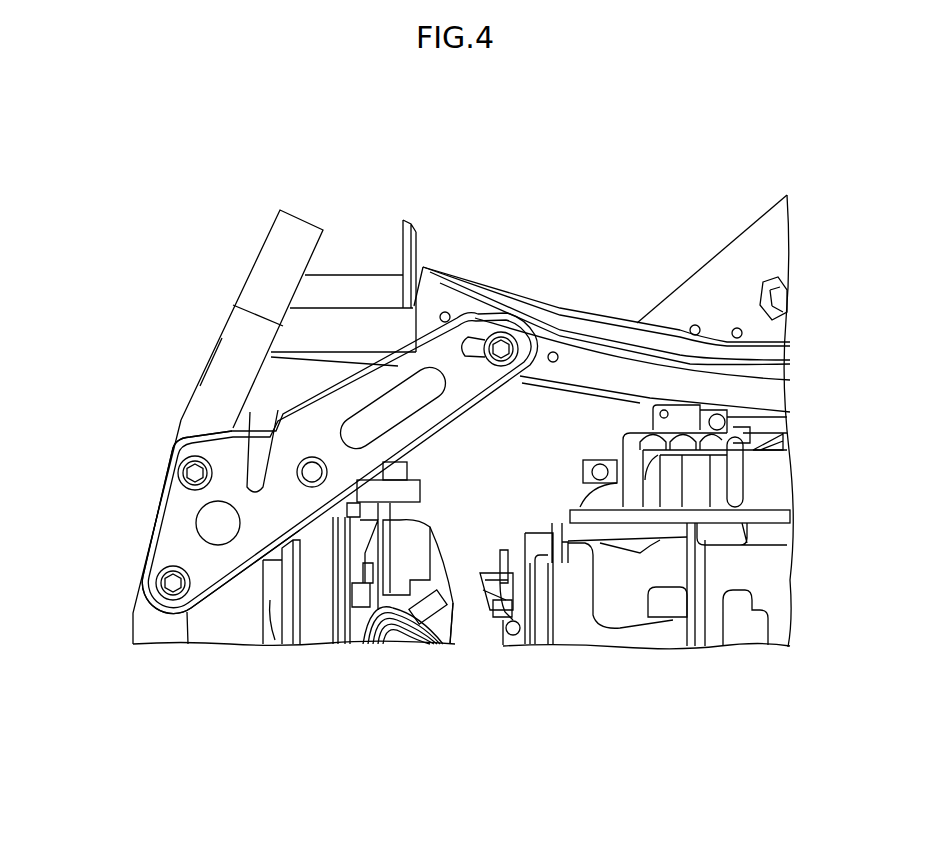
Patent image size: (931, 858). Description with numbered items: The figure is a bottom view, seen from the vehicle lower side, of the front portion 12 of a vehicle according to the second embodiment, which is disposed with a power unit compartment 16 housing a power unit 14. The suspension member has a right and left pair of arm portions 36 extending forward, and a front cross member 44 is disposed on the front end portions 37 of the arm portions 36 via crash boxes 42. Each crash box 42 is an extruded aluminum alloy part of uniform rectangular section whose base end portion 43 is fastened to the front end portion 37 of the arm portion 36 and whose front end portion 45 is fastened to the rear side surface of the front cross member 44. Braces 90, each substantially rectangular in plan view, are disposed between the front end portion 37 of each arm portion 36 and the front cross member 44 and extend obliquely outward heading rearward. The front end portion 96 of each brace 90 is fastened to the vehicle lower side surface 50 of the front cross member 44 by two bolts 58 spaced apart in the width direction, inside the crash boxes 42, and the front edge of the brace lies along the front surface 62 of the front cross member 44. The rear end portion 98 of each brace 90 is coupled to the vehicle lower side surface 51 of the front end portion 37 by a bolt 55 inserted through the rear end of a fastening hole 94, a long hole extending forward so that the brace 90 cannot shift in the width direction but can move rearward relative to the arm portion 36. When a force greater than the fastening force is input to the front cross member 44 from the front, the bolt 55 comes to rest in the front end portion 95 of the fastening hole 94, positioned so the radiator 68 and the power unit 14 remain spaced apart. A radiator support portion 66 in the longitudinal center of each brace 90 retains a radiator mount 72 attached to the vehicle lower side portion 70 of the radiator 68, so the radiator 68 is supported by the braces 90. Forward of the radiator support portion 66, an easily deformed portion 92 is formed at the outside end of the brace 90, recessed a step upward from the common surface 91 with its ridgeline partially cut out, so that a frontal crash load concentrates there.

The front portion 12 is at (447, 164).
The power unit 14 is at (645, 638).
The power unit compartment 16 is at (479, 642).
The arm portion 36 is at (592, 365).
The front end portion 37 is at (440, 287).
The crash box 42 is at (359, 287).
The base end portion 43 is at (398, 290).
The front cross member 44 is at (215, 335).
The front end portion 45 is at (233, 303).
The vehicle lower side surface 50 is at (207, 376).
The vehicle lower side surface 51 is at (608, 358).
The bolt 55 is at (505, 365).
The bolt 58 is at (185, 463).
The front surface 62 is at (128, 630).
The radiator support portion 66 is at (310, 465).
The radiator 68 is at (318, 634).
The vehicle lower side portion 70 is at (313, 585).
The radiator mount 72 is at (316, 469).
The brace 90 is at (448, 430).
The common surface 91 is at (256, 510).
The easily deformed portion 92 is at (258, 420).
The fastening hole 94 is at (480, 340).
The front end portion 95 is at (496, 365).
The front end portion 96 is at (160, 525).
The rear end portion 98 is at (530, 298).